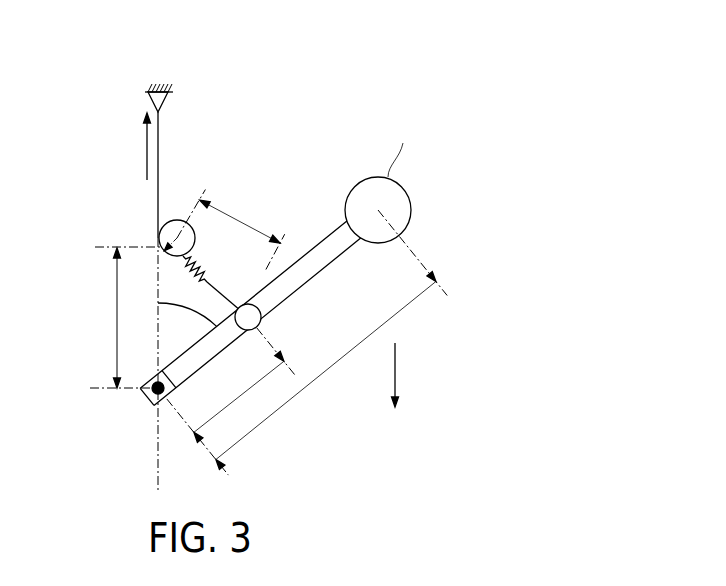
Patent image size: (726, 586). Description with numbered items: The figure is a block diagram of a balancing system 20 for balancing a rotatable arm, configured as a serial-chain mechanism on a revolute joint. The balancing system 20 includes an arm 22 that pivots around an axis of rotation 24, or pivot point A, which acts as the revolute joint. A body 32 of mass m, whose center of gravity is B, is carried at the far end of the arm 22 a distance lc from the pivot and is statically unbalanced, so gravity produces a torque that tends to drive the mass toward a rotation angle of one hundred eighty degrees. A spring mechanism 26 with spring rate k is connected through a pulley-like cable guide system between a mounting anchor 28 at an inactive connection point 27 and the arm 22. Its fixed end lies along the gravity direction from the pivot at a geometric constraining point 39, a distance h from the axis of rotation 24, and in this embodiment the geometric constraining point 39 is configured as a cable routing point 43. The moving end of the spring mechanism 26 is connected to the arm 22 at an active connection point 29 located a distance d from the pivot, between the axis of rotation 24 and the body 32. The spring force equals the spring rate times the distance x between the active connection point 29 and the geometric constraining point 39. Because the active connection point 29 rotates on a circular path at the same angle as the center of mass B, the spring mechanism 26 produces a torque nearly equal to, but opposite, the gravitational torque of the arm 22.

The balancing system 20 is at (314, 57).
The arm 22 is at (316, 243).
The axis of rotation 24 is at (142, 390).
The spring mechanism 26 is at (210, 280).
The inactive connection point 27 is at (145, 92).
The mounting anchor 28 is at (123, 84).
The active connection point 29 is at (261, 315).
The body 32 is at (411, 202).
The geometric constraining point 39 is at (158, 240).
The cable routing point 43 is at (151, 223).